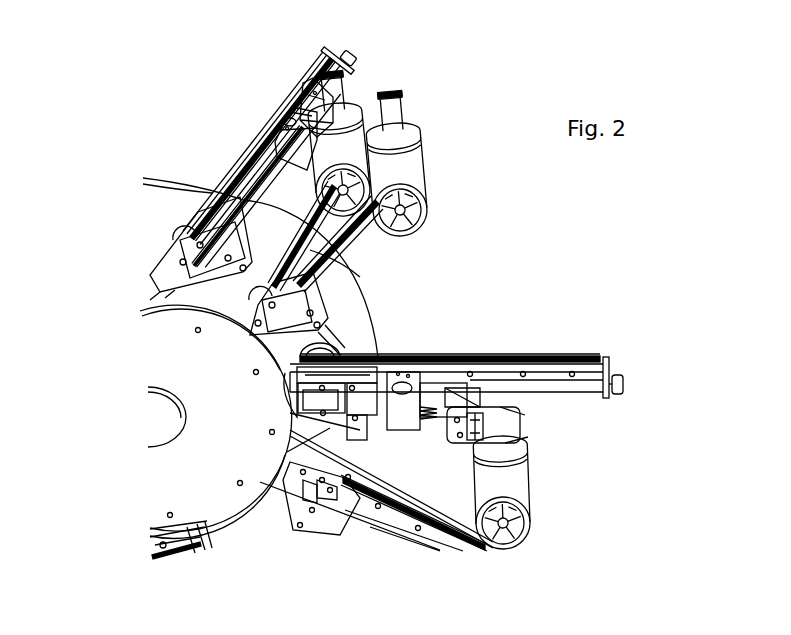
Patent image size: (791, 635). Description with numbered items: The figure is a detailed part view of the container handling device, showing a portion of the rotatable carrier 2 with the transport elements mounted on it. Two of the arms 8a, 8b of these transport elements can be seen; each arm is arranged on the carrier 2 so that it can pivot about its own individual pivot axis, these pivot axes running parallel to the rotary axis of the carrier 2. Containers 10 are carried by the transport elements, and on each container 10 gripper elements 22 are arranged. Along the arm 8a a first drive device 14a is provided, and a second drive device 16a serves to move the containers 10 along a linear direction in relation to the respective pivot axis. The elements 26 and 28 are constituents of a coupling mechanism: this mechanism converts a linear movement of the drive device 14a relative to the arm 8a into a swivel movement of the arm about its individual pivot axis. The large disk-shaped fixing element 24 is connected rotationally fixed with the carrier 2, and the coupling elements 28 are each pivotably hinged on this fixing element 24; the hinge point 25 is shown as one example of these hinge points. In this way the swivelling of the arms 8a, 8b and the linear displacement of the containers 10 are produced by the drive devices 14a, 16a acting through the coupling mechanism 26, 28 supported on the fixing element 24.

The carrier 2 is at (167, 200).
The arm 8a is at (505, 377).
The arm 8b is at (308, 233).
The container 10 is at (413, 177).
The first drive device 14a is at (342, 357).
The second drive device 16a is at (437, 373).
The gripper element 22 is at (497, 417).
The fixing element 24 is at (168, 337).
The hinge point 25 is at (240, 487).
The coupling mechanism constituent 26 is at (348, 402).
The coupling element 28 is at (327, 430).